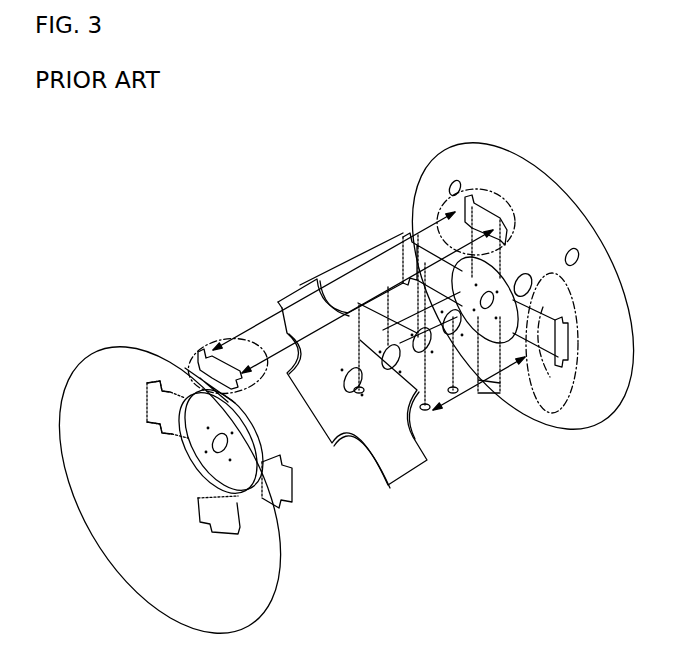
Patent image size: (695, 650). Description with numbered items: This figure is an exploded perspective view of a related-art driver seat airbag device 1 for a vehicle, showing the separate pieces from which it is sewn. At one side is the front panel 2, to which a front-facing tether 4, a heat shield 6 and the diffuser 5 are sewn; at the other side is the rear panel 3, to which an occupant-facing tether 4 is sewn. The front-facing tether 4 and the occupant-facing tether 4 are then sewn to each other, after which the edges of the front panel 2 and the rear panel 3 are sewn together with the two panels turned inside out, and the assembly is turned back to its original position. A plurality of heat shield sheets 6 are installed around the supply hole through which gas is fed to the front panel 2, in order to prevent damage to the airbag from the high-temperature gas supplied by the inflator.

The driver seat airbag device 1 is at (340, 160).
The front panel 2 is at (555, 183).
The rear panel 3 is at (277, 541).
The tether 4 is at (518, 233).
The diffuser 5 is at (414, 476).
The heat shield 6 is at (481, 392).